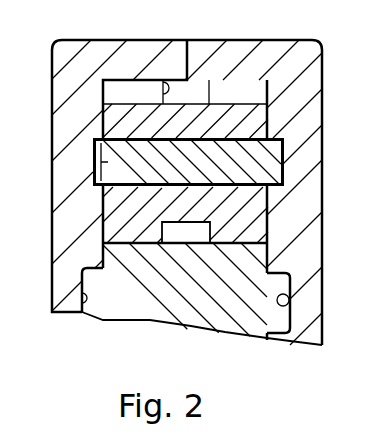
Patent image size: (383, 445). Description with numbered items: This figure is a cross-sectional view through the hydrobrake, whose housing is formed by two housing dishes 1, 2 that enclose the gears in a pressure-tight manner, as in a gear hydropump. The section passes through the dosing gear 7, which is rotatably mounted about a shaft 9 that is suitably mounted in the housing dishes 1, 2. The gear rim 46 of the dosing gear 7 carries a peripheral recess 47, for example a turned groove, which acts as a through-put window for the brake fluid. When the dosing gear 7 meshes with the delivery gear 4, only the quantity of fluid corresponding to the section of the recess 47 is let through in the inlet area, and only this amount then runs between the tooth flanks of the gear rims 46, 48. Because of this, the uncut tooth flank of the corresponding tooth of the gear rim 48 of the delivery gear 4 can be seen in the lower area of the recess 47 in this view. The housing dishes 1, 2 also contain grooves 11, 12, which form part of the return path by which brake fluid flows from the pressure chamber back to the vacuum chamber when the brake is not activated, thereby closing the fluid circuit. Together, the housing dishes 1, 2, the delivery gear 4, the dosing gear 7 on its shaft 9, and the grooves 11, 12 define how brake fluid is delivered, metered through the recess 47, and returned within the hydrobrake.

The housing dish 1 is at (316, 160).
The housing dish 2 is at (58, 181).
The delivery gear 4 is at (180, 312).
The dosing gear 7 is at (255, 228).
The shaft 9 is at (106, 162).
The groove 11 is at (291, 291).
The groove 12 is at (80, 283).
The gear rim 46 is at (253, 92).
The peripheral recess 47 is at (172, 91).
The gear rim 48 is at (183, 232).